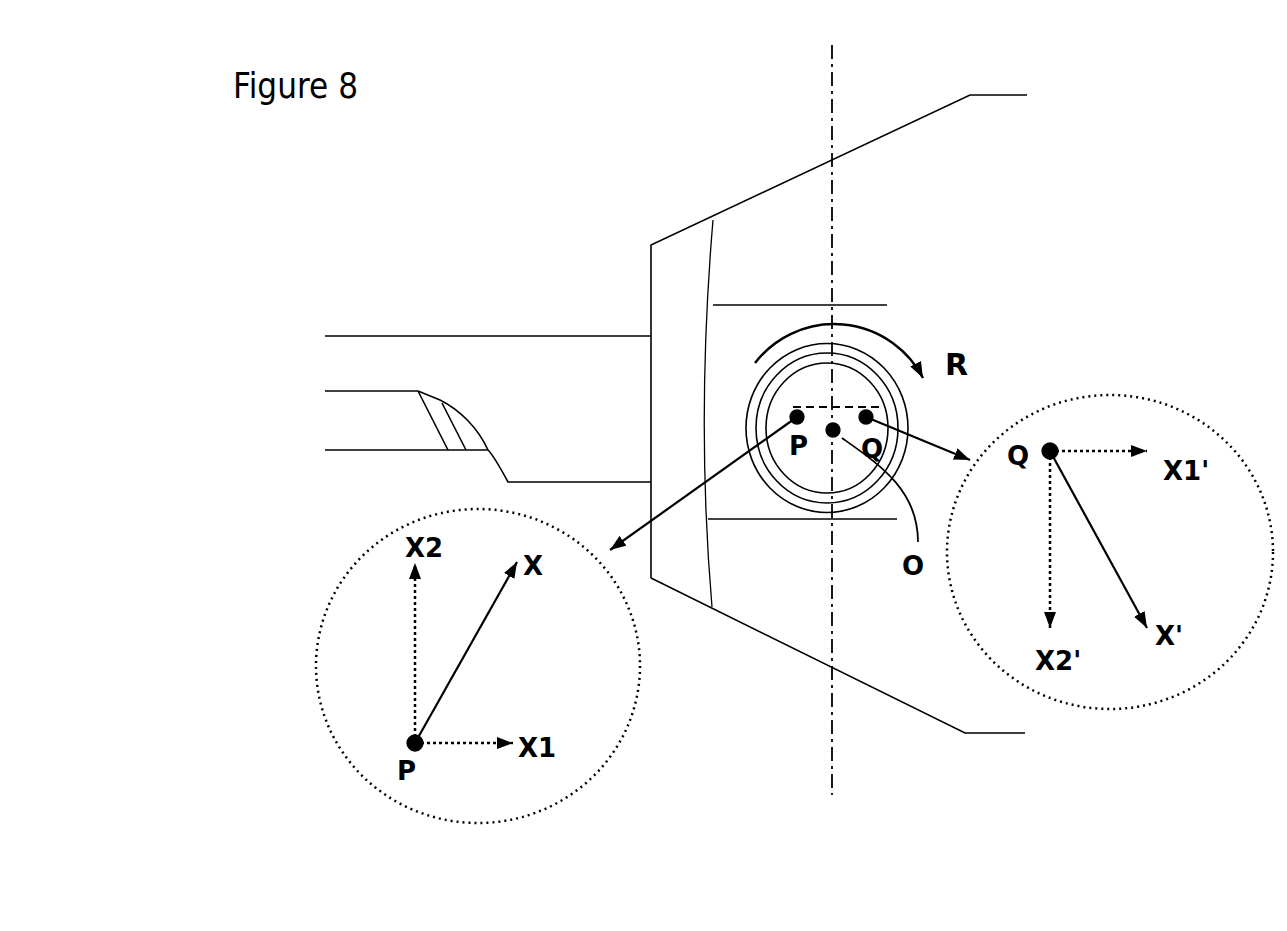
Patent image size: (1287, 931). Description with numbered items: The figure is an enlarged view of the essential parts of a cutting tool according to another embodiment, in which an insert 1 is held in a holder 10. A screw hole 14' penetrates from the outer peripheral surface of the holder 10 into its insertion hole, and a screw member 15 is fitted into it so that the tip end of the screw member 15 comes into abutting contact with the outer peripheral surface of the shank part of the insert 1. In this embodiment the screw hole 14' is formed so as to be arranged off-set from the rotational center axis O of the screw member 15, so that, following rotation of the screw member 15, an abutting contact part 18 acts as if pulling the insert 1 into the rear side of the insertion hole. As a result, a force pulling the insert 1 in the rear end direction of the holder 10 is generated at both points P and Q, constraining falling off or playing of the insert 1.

The insert 1 is at (483, 340).
The holder 10 is at (762, 212).
The screw hole 14' is at (827, 484).
The screw member 15 is at (845, 487).
The abutting contact part 18 is at (783, 407).